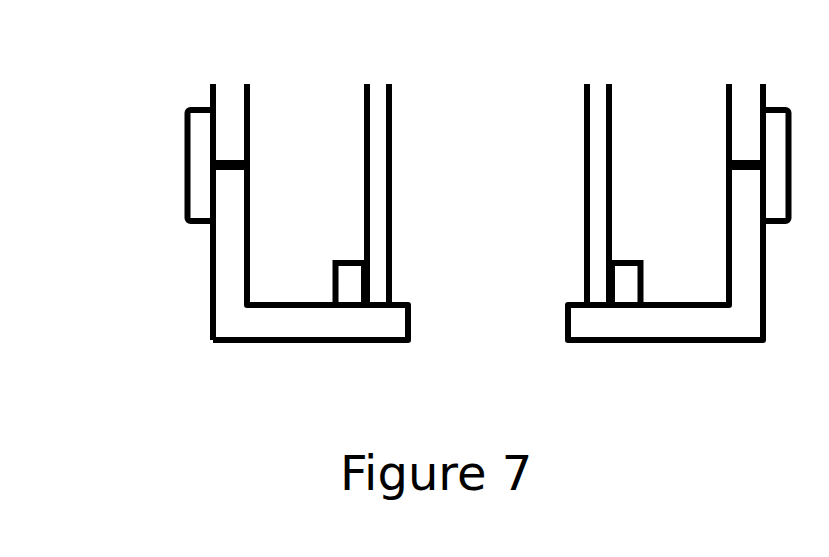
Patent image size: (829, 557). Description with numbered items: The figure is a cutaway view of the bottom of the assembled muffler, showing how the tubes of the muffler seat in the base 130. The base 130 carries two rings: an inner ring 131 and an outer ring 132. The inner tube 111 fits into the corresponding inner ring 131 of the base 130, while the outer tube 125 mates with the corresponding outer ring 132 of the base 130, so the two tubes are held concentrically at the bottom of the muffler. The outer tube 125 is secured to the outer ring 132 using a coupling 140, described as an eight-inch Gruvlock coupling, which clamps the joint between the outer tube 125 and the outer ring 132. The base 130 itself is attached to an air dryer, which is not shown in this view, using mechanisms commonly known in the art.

The outer tube 125 is at (196, 86).
The coupling 140 is at (169, 174).
The outer ring 132 is at (193, 257).
The base 130 is at (193, 325).
The inner tube 111 is at (566, 145).
The inner ring 131 is at (632, 244).